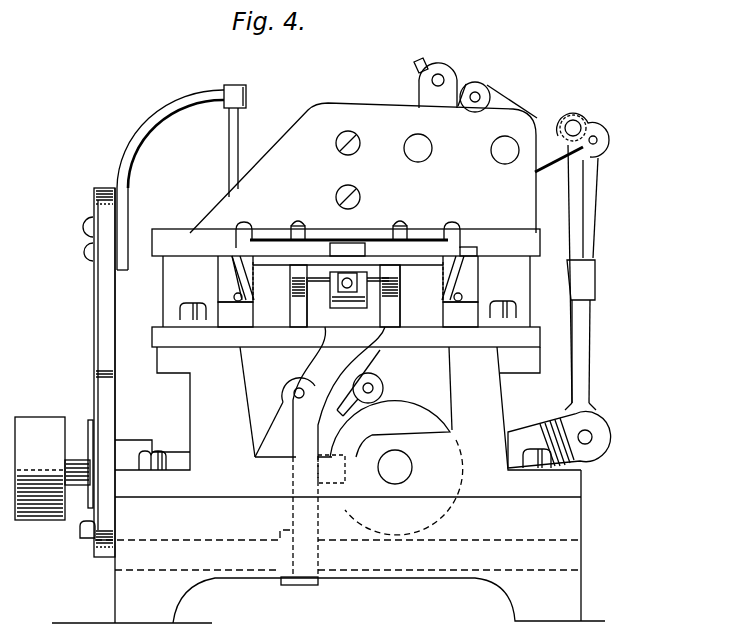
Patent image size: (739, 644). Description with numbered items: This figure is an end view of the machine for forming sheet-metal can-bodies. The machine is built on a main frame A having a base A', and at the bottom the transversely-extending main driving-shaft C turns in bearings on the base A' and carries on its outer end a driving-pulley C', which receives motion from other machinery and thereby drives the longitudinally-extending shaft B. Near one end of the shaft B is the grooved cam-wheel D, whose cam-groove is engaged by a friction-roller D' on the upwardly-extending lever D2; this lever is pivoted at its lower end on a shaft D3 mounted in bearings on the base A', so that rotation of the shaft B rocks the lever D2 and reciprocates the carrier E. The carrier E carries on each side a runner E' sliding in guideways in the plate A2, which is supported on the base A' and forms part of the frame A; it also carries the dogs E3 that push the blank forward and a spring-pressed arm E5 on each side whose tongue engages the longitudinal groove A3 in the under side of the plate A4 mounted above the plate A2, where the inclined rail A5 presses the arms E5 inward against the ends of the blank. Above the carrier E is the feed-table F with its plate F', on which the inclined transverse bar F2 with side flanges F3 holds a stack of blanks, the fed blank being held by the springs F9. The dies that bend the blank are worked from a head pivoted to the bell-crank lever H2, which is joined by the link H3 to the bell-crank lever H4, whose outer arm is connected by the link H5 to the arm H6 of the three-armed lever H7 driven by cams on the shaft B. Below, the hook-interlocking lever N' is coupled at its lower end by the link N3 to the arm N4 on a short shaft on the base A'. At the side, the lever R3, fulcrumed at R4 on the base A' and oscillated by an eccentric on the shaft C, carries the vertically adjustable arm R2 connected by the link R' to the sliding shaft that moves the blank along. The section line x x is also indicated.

The main frame A is at (152, 437).
The base A' is at (328, 405).
The plate A2 is at (346, 337).
The groove A3 is at (456, 250).
The plate A4 is at (506, 236).
The rail A5 is at (232, 243).
The longitudinally-extending shaft B is at (408, 468).
The main driving-shaft C is at (79, 453).
The driving-pulley C' is at (40, 468).
The grooved cam-wheel D is at (359, 460).
The friction-roller D' is at (348, 357).
The lever D2 is at (333, 456).
The shaft D3 is at (337, 550).
The carrier E is at (374, 291).
The runner E' is at (348, 307).
The dogs E3 is at (304, 285).
The spring-pressed arm E5 is at (230, 258).
The feed-table F is at (348, 232).
The plate F' is at (353, 257).
The bar F2 is at (364, 243).
The flanges F3 is at (242, 232).
The springs F9 is at (297, 223).
The bell-crank lever H2 is at (417, 98).
The link H3 is at (455, 86).
The bell-crank lever H4 is at (532, 119).
The link H5 is at (574, 253).
The arm H6 is at (598, 134).
The three-armed lever H7 is at (595, 274).
The lever N' is at (394, 388).
The link N3 is at (344, 412).
The arm N4 is at (277, 402).
The link R' is at (243, 152).
The arm R2 is at (223, 90).
The lever R3 is at (98, 315).
The fulcrum R4 is at (82, 535).
The section line x is at (153, 638).